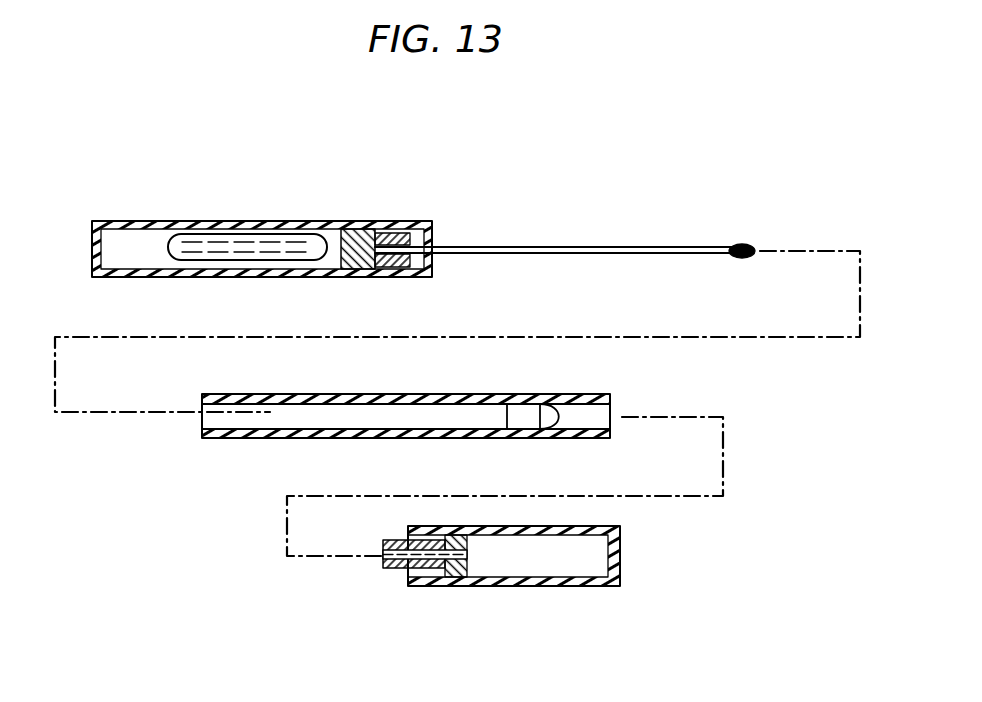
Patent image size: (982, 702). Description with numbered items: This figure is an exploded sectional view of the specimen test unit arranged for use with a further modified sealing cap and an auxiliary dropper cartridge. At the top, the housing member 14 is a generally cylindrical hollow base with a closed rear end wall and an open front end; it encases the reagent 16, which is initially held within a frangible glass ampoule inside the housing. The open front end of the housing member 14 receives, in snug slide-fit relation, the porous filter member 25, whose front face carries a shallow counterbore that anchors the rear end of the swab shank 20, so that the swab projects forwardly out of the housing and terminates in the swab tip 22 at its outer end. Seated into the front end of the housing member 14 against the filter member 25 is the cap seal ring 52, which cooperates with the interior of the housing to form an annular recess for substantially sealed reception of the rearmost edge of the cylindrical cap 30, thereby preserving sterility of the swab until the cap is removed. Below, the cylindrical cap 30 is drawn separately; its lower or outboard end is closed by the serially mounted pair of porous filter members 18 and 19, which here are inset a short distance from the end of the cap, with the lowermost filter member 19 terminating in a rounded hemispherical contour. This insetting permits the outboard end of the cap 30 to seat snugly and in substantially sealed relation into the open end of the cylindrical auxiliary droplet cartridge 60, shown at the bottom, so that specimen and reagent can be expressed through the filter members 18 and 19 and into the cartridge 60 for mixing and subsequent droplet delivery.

The housing member 14 is at (178, 218).
The reagent 16 is at (248, 247).
The filter member 18 is at (522, 410).
The filter member 19 is at (551, 412).
The swab shank 20 is at (572, 248).
The rod tip 22 is at (741, 245).
The porous filter member 25 is at (350, 228).
The cylindrical cap 30 is at (340, 393).
The cap seal ring 52 is at (384, 277).
The auxiliary droplet cartridge 60 is at (630, 559).